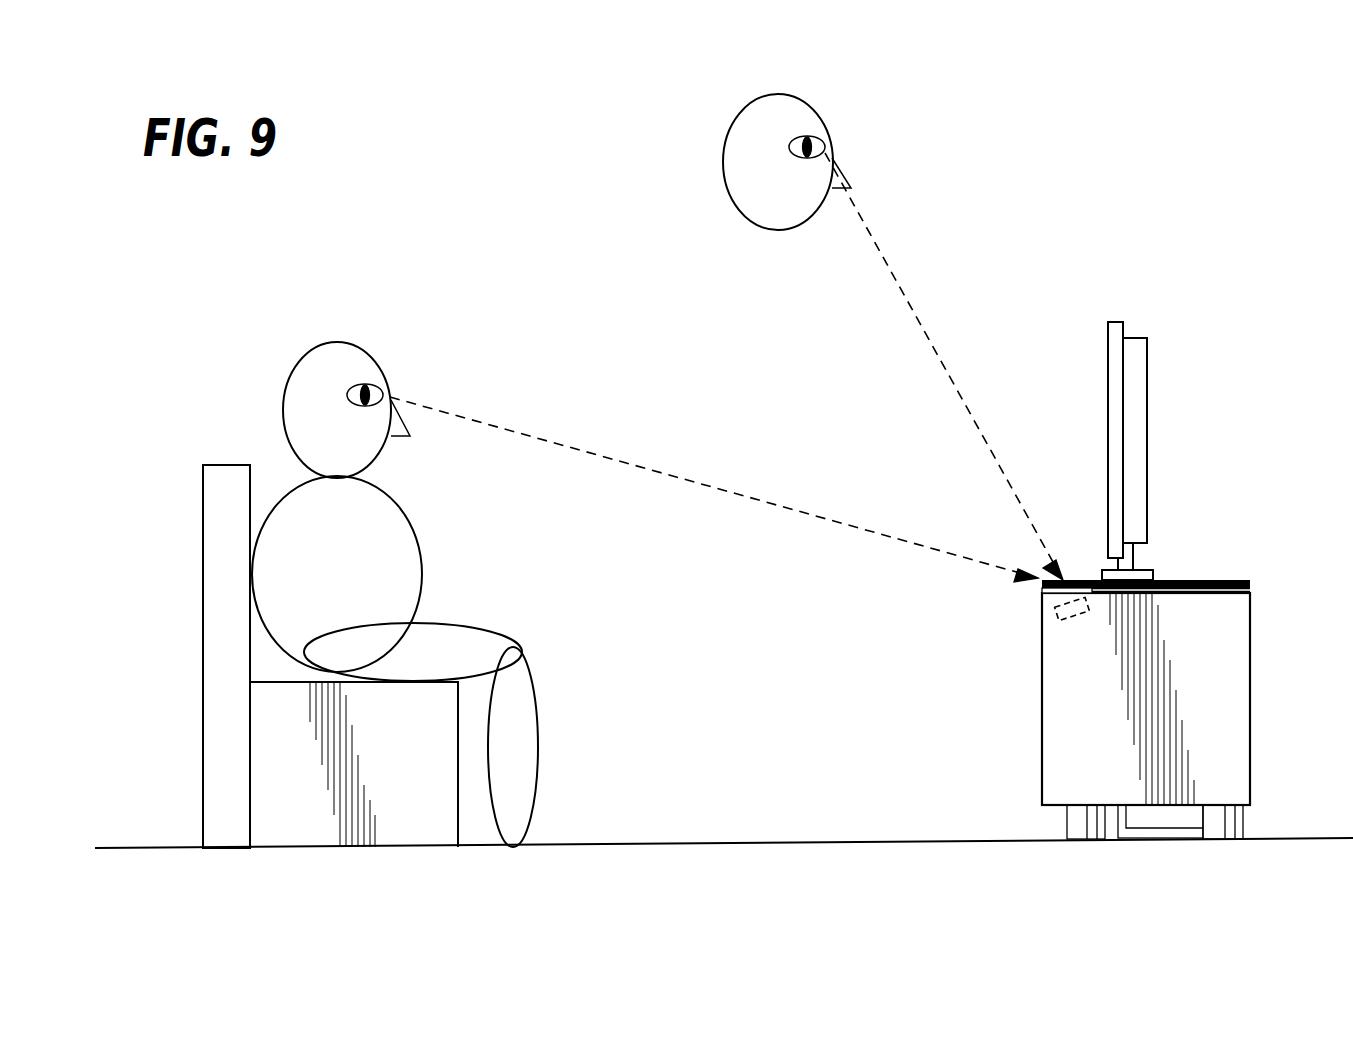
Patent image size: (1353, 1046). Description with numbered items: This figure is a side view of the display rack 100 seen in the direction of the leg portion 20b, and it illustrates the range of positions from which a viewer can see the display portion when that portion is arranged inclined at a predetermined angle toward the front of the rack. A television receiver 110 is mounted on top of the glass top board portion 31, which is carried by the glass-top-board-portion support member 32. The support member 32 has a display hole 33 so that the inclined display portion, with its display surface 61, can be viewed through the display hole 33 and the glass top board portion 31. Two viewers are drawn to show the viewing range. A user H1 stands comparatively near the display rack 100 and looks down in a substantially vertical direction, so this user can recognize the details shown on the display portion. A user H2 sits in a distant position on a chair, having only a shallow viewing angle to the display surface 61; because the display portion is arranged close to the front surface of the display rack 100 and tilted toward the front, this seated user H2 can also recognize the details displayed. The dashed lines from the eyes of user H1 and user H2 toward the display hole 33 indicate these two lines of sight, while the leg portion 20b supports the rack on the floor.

The user H1 is at (722, 157).
The user H2 is at (337, 341).
The television receiver 110 is at (1148, 372).
The display rack 100 is at (1183, 552).
The glass top board portion 31 is at (1238, 577).
The glass-top-board-portion support member 32 is at (1252, 589).
The display hole 33 is at (1078, 580).
The display surface 61 is at (1054, 612).
The leg portion 20b is at (1232, 735).